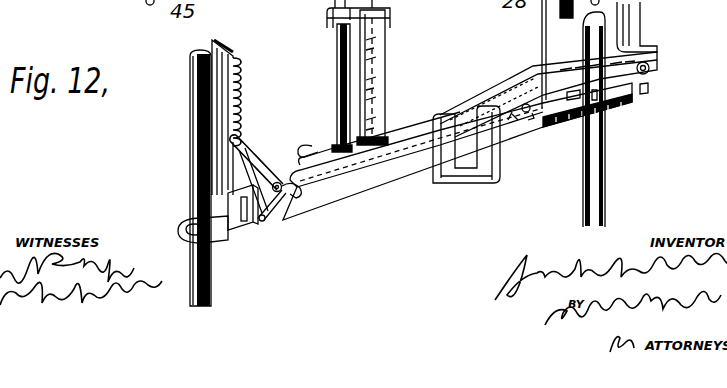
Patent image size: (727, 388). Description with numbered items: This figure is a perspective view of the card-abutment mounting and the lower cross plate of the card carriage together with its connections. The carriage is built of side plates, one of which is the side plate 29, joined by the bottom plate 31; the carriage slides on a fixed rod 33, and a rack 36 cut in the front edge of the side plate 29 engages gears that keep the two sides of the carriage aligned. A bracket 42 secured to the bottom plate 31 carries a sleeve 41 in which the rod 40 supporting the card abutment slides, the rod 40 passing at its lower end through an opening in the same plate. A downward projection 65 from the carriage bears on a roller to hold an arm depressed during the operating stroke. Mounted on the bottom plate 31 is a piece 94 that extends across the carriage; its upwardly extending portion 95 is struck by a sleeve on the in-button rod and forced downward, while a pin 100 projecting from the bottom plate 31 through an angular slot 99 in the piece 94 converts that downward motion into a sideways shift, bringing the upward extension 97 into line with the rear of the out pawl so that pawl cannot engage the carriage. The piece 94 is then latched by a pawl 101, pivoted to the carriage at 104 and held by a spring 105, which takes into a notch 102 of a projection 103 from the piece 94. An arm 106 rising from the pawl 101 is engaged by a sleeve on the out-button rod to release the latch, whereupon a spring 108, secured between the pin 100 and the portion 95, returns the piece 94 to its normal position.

The side plate 29 is at (226, 44).
The bottom plate 31 is at (384, 186).
The fixed rod 33 is at (190, 107).
The rack 36 is at (241, 80).
The rod 40 is at (336, 70).
The sleeve 41 is at (334, 28).
The bracket 42 is at (384, 100).
The downward projection 65 is at (452, 176).
The piece 94 is at (304, 172).
The upwardly extending portion 95 is at (278, 180).
The upward extension 97 is at (634, 24).
The angular slot 99 is at (254, 230).
The pin 100 is at (266, 222).
The pawl 101 is at (618, 102).
The notch 102 is at (573, 125).
The projection 103 is at (537, 130).
The pivot 104 is at (650, 72).
The spring 105 is at (600, 108).
The arm 106 is at (562, 40).
The spring 108 is at (292, 197).